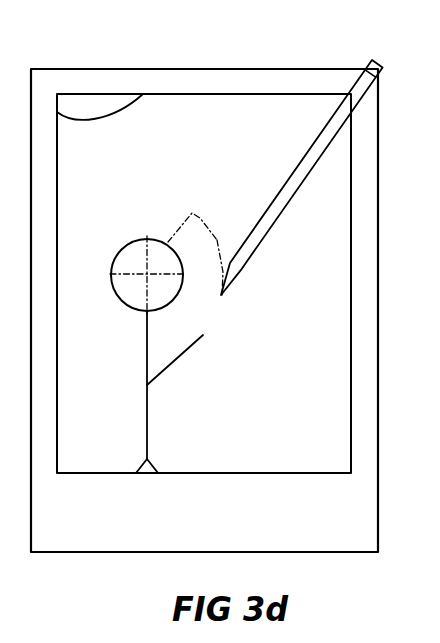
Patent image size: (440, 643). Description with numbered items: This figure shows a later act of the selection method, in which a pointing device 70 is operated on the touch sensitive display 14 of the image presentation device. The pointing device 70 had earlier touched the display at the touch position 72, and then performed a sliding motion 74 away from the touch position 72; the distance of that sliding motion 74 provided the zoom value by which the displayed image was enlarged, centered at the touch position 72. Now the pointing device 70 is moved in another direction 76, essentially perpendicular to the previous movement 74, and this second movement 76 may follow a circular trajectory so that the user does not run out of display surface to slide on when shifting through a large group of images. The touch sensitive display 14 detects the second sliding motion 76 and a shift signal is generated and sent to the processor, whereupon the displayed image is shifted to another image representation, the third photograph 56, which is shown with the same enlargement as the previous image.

The touch sensitive display 14 is at (106, 460).
The third photograph 56 is at (255, 445).
The pointing device 70 is at (363, 68).
The touch position 72 is at (135, 262).
The sliding motion 74 is at (176, 236).
The second sliding motion 76 is at (222, 238).